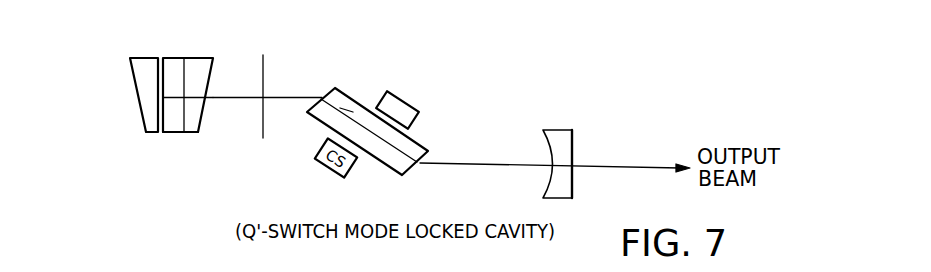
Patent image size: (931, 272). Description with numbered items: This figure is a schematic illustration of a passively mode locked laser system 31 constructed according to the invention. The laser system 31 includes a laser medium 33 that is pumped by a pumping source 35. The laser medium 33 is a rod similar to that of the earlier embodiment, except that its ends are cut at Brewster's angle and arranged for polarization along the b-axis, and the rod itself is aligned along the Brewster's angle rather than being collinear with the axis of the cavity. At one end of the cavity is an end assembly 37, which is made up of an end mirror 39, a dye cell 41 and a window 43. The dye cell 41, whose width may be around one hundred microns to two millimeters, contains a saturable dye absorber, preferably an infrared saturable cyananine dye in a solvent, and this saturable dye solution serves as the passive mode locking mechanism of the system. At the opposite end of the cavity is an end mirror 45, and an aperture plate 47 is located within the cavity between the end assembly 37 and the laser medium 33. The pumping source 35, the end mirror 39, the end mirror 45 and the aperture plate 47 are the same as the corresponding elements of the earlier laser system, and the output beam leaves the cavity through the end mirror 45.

The passively mode locked laser system 31 is at (212, 175).
The laser medium 33 is at (422, 145).
The pumping source 35 is at (403, 100).
The end assembly 37 is at (155, 95).
The end mirror 39 is at (137, 97).
The dye cell 41 is at (173, 133).
The window 43 is at (203, 60).
The end mirror 45 is at (573, 147).
The aperture plate 47 is at (265, 70).